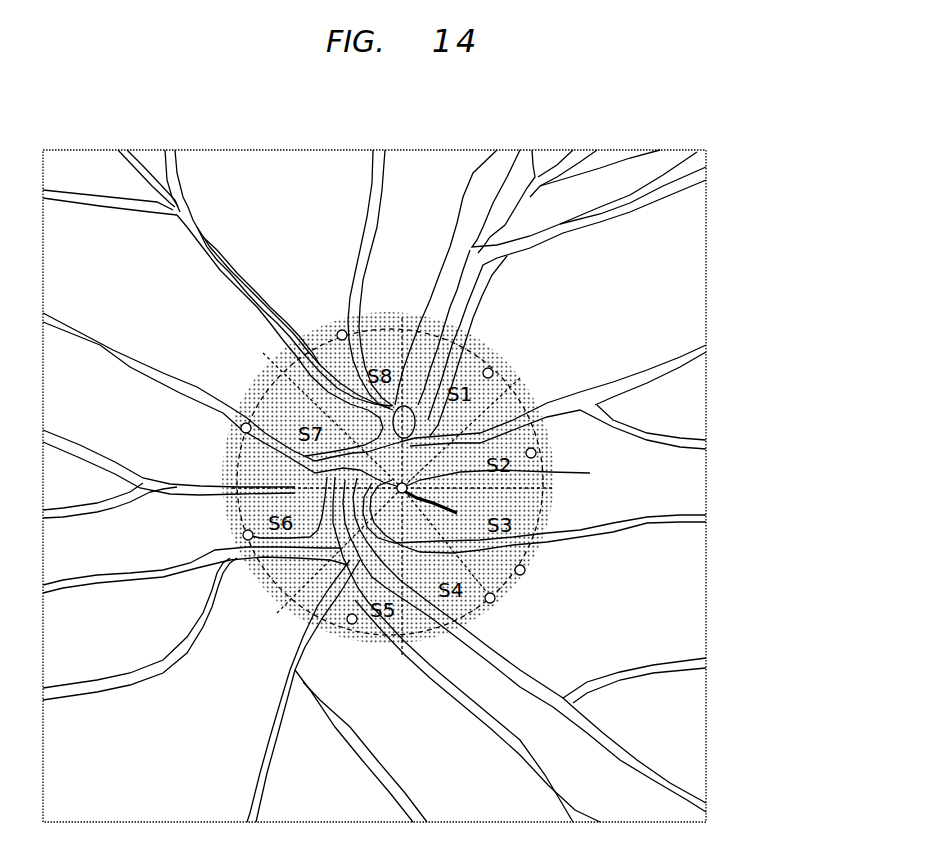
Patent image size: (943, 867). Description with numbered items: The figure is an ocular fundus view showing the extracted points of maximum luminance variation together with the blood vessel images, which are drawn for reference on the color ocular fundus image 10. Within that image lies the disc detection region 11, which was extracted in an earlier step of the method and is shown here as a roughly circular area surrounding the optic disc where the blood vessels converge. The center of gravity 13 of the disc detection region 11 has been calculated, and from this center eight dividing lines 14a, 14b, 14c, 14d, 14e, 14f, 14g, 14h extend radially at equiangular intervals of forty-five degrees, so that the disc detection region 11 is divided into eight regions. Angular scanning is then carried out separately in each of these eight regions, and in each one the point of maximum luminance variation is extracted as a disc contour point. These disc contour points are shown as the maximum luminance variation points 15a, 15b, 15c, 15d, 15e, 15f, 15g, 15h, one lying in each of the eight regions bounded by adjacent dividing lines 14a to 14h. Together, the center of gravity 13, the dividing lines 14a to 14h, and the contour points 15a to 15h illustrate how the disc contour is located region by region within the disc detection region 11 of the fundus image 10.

The color ocular fundus image 10 is at (706, 282).
The disc detection region 11 is at (558, 383).
The center of gravity 13 is at (590, 473).
The dividing line 14a is at (402, 313).
The dividing line 14b is at (519, 368).
The dividing line 14c is at (558, 488).
The dividing line 14d is at (503, 594).
The dividing line 14e is at (403, 660).
The dividing line 14f is at (278, 617).
The dividing line 14g is at (232, 488).
The dividing line 14h is at (263, 348).
The maximum luminance variation point 15a is at (489, 367).
The maximum luminance variation point 15b is at (537, 453).
The maximum luminance variation point 15c is at (526, 569).
The maximum luminance variation point 15d is at (492, 604).
The maximum luminance variation point 15e is at (352, 625).
The maximum luminance variation point 15f is at (242, 535).
The maximum luminance variation point 15g is at (240, 428).
The maximum luminance variation point 15h is at (338, 330).